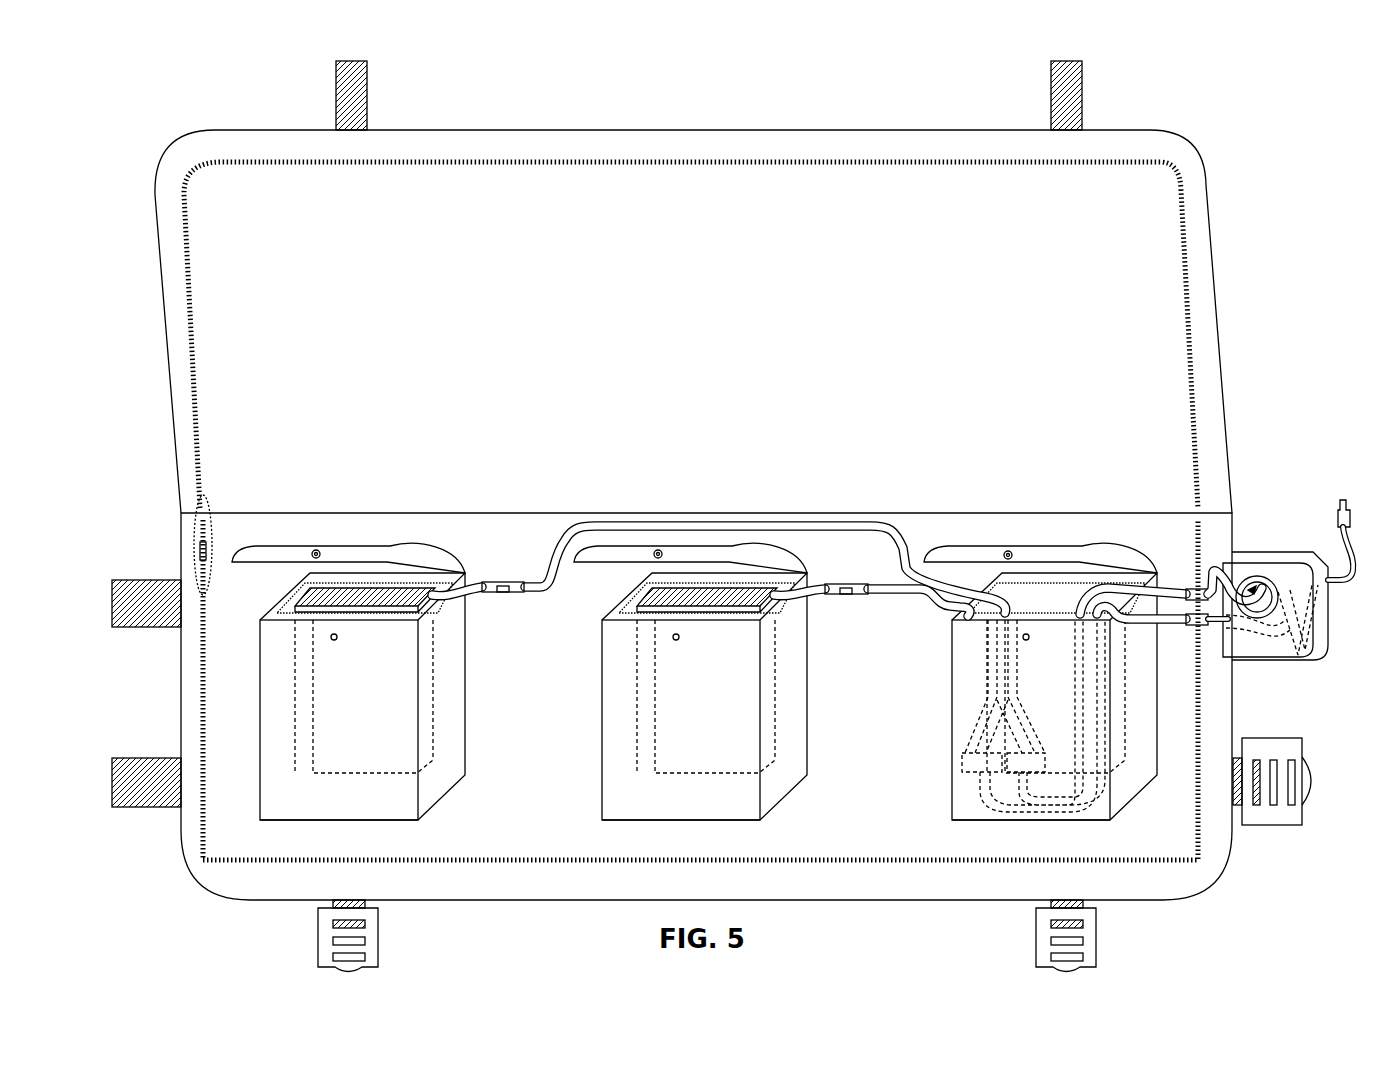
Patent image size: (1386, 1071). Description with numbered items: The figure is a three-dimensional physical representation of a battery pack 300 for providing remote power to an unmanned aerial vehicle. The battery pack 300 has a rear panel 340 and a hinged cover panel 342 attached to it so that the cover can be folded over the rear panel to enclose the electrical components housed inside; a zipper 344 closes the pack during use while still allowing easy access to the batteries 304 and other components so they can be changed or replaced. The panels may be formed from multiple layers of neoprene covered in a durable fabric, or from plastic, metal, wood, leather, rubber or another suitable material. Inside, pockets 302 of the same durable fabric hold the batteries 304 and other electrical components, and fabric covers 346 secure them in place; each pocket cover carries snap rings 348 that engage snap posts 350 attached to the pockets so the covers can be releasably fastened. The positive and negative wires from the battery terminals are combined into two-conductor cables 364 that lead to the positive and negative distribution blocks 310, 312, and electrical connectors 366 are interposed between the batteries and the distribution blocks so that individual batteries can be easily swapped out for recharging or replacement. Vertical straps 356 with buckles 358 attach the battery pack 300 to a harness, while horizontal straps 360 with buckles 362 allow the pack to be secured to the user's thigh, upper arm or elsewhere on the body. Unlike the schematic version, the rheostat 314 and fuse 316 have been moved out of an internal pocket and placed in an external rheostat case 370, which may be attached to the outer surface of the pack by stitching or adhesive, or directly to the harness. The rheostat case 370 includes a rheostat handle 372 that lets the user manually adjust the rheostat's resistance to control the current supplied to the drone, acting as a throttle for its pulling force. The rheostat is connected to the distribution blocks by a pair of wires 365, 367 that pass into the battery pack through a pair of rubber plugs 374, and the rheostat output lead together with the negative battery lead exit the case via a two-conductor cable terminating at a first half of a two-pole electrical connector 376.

The battery pack 300 is at (571, 84).
The pockets 302 is at (600, 790).
The batteries 304 is at (292, 592).
The positive distribution block 310 is at (1042, 750).
The negative distribution block 312 is at (960, 760).
The rheostat 314 is at (1260, 577).
The fuse 316 is at (1313, 604).
The rear panel 340 is at (700, 690).
The hinged cover panel 342 is at (691, 335).
The zipper 344 is at (199, 558).
The fabric covers 346 is at (365, 545).
The snap rings 348 is at (312, 551).
The snap posts 350 is at (337, 641).
The vertical straps 356 is at (367, 118).
The buckles 358 is at (380, 912).
The horizontal straps 360 is at (145, 628).
The buckles 362 is at (1280, 738).
The two-conductor cables 364 is at (705, 520).
The wire 365 is at (1212, 572).
The electrical connectors 366 is at (500, 581).
The wire 367 is at (1214, 629).
The external rheostat case 370 is at (1272, 661).
The rheostat handle 372 is at (1234, 570).
The rubber plugs 374 is at (1195, 588).
The two-pole electrical connector 376 is at (1338, 510).